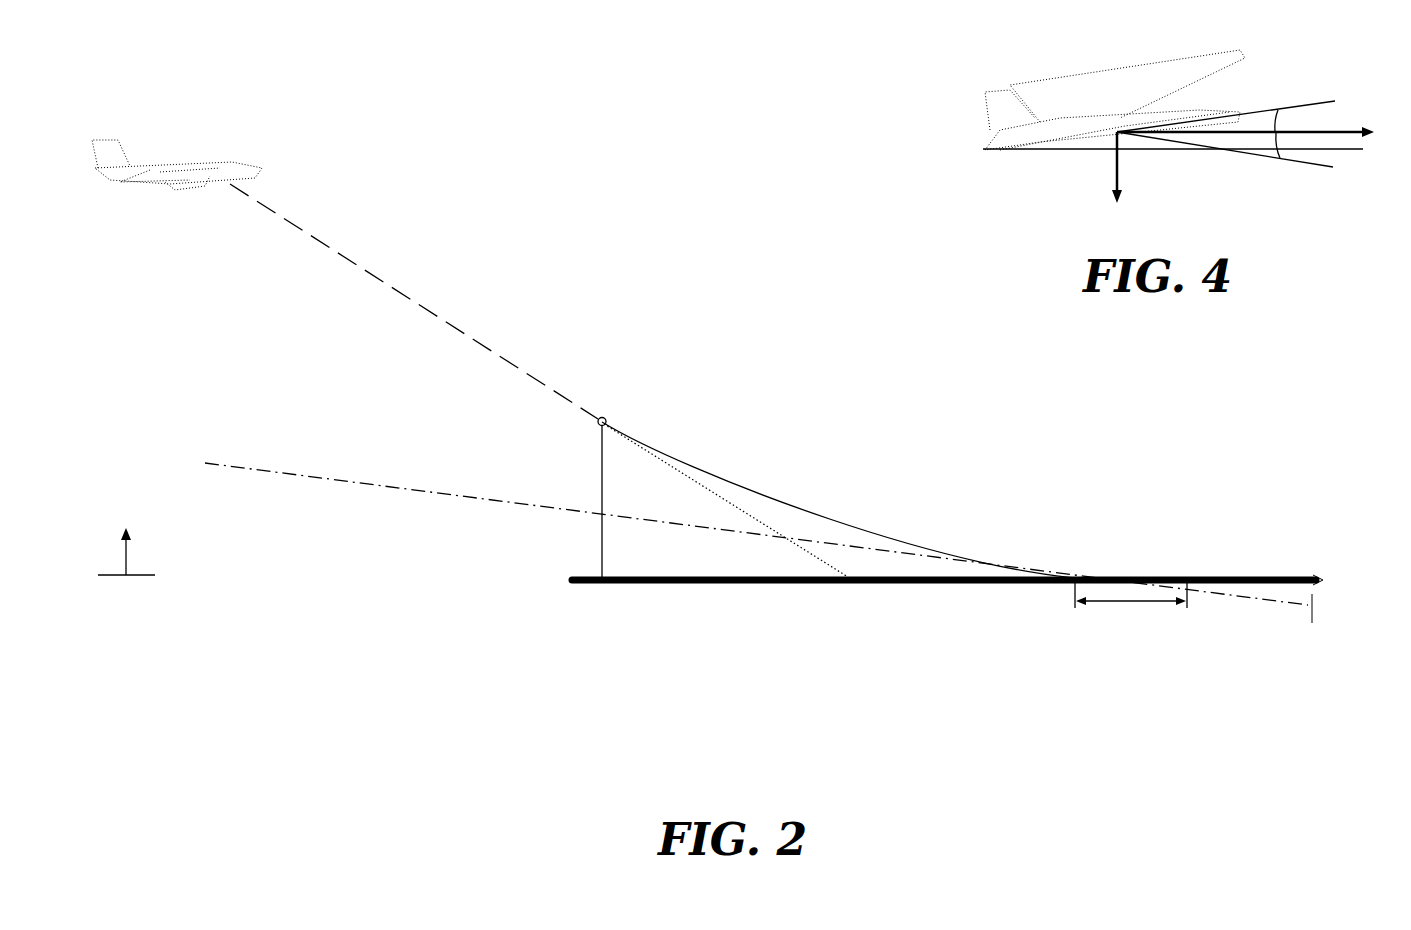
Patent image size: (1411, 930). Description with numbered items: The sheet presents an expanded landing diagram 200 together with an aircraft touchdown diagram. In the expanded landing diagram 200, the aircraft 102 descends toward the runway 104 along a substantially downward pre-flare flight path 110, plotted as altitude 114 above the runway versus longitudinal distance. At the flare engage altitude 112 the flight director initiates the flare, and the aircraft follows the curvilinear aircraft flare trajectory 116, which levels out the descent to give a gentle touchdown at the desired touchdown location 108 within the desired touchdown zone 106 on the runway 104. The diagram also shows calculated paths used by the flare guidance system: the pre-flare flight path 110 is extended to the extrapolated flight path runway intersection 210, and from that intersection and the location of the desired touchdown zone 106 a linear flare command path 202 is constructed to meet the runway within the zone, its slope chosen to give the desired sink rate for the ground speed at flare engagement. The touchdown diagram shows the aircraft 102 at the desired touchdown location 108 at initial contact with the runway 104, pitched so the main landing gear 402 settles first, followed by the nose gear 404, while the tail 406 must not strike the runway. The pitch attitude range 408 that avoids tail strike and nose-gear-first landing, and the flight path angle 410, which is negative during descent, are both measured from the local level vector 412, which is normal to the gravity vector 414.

In FIG. 2, the aircraft 102 is at (222, 162).
In FIG. 4, the aircraft 102 is at (1106, 113).
In FIG. 2, the runway 104 is at (612, 585).
In FIG. 4, the runway 104 is at (1000, 150).
In FIG. 2, the desired touchdown zone 106 is at (1132, 632).
In FIG. 2, the desired touchdown location 108 is at (1134, 571).
In FIG. 4, the desired touchdown location 108 is at (1107, 160).
In FIG. 2, the pre-flare flight path 110 is at (414, 301).
In FIG. 2, the flare engage altitude 112 is at (607, 418).
In FIG. 2, the altitude 114 is at (128, 527).
In FIG. 2, the aircraft flare trajectory 116 is at (834, 514).
In FIG. 2, the expanded landing diagram 200 is at (632, 90).
In FIG. 2, the flare command path 202 is at (747, 513).
In FIG. 2, the extrapolated flight path runway intersection 210 is at (849, 595).
In FIG. 4, the main landing gear 402 is at (1110, 148).
In FIG. 4, the nose gear 404 is at (1222, 133).
In FIG. 4, the tail 406 is at (1037, 145).
In FIG. 4, the pitch attitude range 408 is at (1297, 121).
In FIG. 4, the flight path angle 410 is at (1296, 146).
In FIG. 4, the local level vector 412 is at (1357, 128).
In FIG. 4, the gravity vector 414 is at (1120, 168).